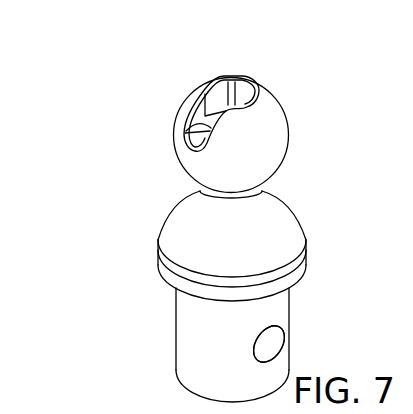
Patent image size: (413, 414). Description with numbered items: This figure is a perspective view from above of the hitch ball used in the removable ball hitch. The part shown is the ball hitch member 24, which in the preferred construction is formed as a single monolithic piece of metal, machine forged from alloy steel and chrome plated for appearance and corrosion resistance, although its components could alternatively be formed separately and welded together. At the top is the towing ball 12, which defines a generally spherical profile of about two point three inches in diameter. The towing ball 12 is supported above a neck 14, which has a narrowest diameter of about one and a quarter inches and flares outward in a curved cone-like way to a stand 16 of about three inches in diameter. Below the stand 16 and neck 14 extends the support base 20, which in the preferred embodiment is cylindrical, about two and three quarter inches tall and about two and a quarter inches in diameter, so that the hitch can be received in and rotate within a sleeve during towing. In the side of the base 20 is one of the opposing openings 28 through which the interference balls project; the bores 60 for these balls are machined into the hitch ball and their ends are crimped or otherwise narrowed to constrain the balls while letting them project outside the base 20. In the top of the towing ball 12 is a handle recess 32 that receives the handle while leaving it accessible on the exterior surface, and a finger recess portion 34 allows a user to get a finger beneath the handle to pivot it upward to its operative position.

The towing ball 12 is at (267, 122).
The neck 14 is at (262, 199).
The stand 16 is at (292, 276).
The support base 20 is at (202, 352).
The ball hitch member 24 is at (143, 137).
The opening 28 is at (273, 345).
The handle recess 32 is at (218, 91).
The finger recess portion 34 is at (200, 137).
The bore 60 is at (270, 352).